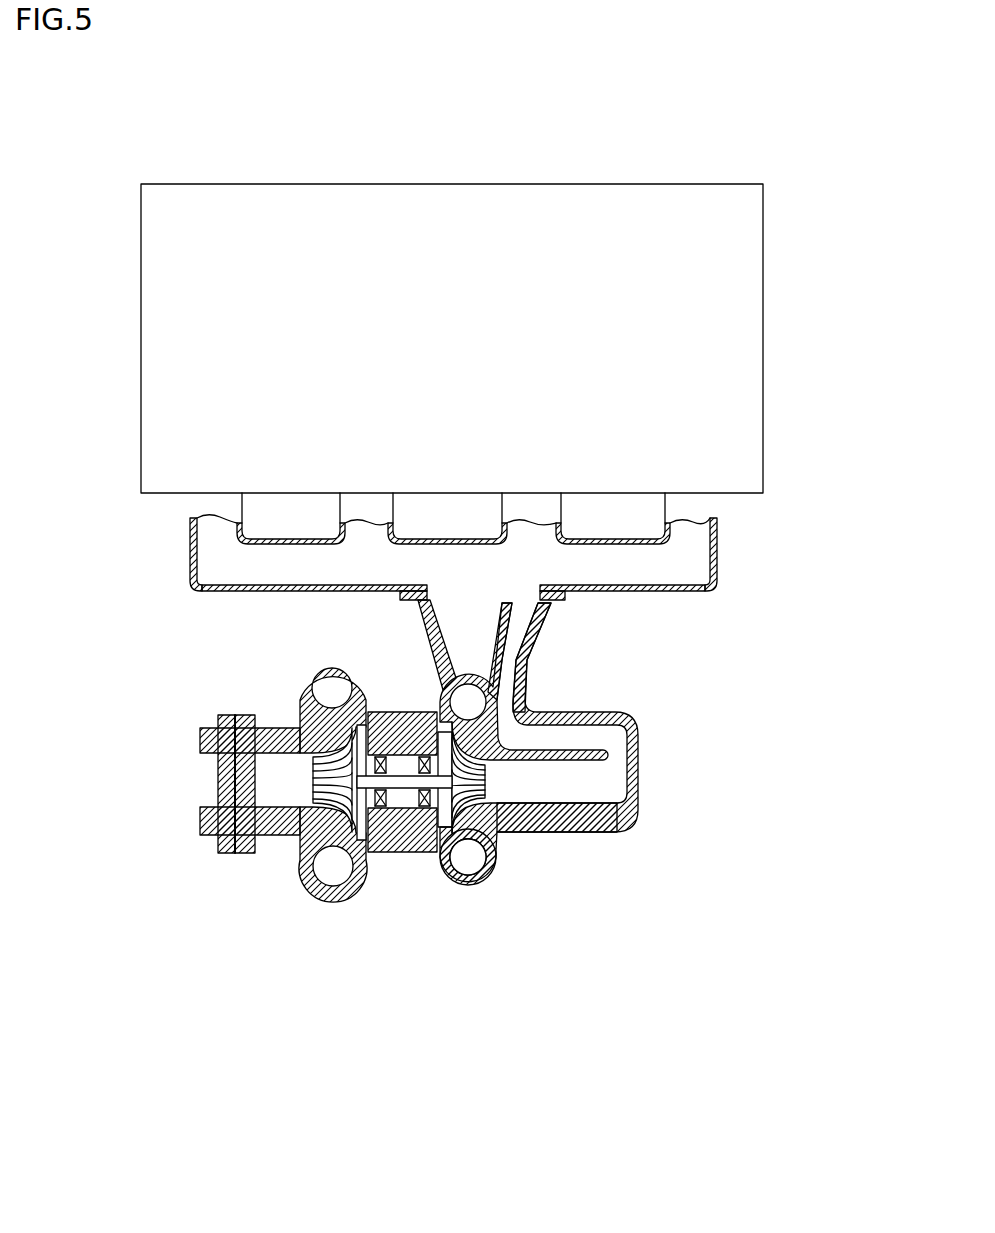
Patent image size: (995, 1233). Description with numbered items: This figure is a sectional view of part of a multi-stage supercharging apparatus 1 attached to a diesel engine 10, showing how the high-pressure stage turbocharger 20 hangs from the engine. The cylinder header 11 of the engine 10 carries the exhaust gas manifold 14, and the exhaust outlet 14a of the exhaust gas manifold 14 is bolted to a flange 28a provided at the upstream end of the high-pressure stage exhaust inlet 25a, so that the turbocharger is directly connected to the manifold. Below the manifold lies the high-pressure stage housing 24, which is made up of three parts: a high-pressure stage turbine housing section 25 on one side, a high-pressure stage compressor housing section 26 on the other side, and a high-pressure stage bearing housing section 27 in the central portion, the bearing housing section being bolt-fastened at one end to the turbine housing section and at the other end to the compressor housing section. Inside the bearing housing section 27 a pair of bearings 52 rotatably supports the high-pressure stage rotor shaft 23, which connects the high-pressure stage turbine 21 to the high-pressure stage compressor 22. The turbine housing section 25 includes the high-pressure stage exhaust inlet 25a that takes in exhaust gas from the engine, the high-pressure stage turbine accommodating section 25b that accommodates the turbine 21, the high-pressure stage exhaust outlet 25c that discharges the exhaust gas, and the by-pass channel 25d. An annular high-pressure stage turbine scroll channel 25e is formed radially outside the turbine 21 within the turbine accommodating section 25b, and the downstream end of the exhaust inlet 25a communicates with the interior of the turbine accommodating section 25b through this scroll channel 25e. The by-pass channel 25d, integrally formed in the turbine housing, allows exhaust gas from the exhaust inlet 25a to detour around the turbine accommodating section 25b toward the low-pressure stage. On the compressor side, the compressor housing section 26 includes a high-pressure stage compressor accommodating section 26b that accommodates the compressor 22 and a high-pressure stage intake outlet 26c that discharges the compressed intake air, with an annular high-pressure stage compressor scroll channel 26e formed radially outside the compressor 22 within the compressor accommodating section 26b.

The multi-stage supercharging apparatus 1 is at (692, 877).
The diesel engine 10 is at (611, 180).
The cylinder header 11 is at (452, 348).
The exhaust gas manifold 14 is at (719, 550).
The exhaust outlet 14a is at (410, 588).
The high-pressure stage turbocharger 20 is at (690, 707).
The high-pressure stage turbine 21 is at (417, 777).
The high-pressure stage compressor 22 is at (312, 778).
The high-pressure stage rotor shaft 23 is at (425, 852).
The high-pressure stage housing 24 is at (538, 1062).
The high-pressure stage turbine housing section 25 is at (648, 1020).
The high-pressure stage exhaust inlet 25a is at (550, 604).
The high-pressure stage turbine accommodating section 25b is at (462, 892).
The high-pressure stage exhaust outlet 25c is at (548, 835).
The by-pass channel 25d is at (510, 672).
The high-pressure stage turbine scroll channel 25e is at (477, 866).
The high-pressure stage compressor housing section 26 is at (364, 1020).
The high-pressure stage compressor accommodating section 26b is at (318, 898).
The high-pressure stage intake outlet 26c is at (267, 837).
The high-pressure stage compressor scroll channel 26e is at (318, 682).
The high-pressure stage bearing housing section 27 is at (412, 782).
The flange 28a is at (402, 602).
The bearings 52 is at (394, 755).